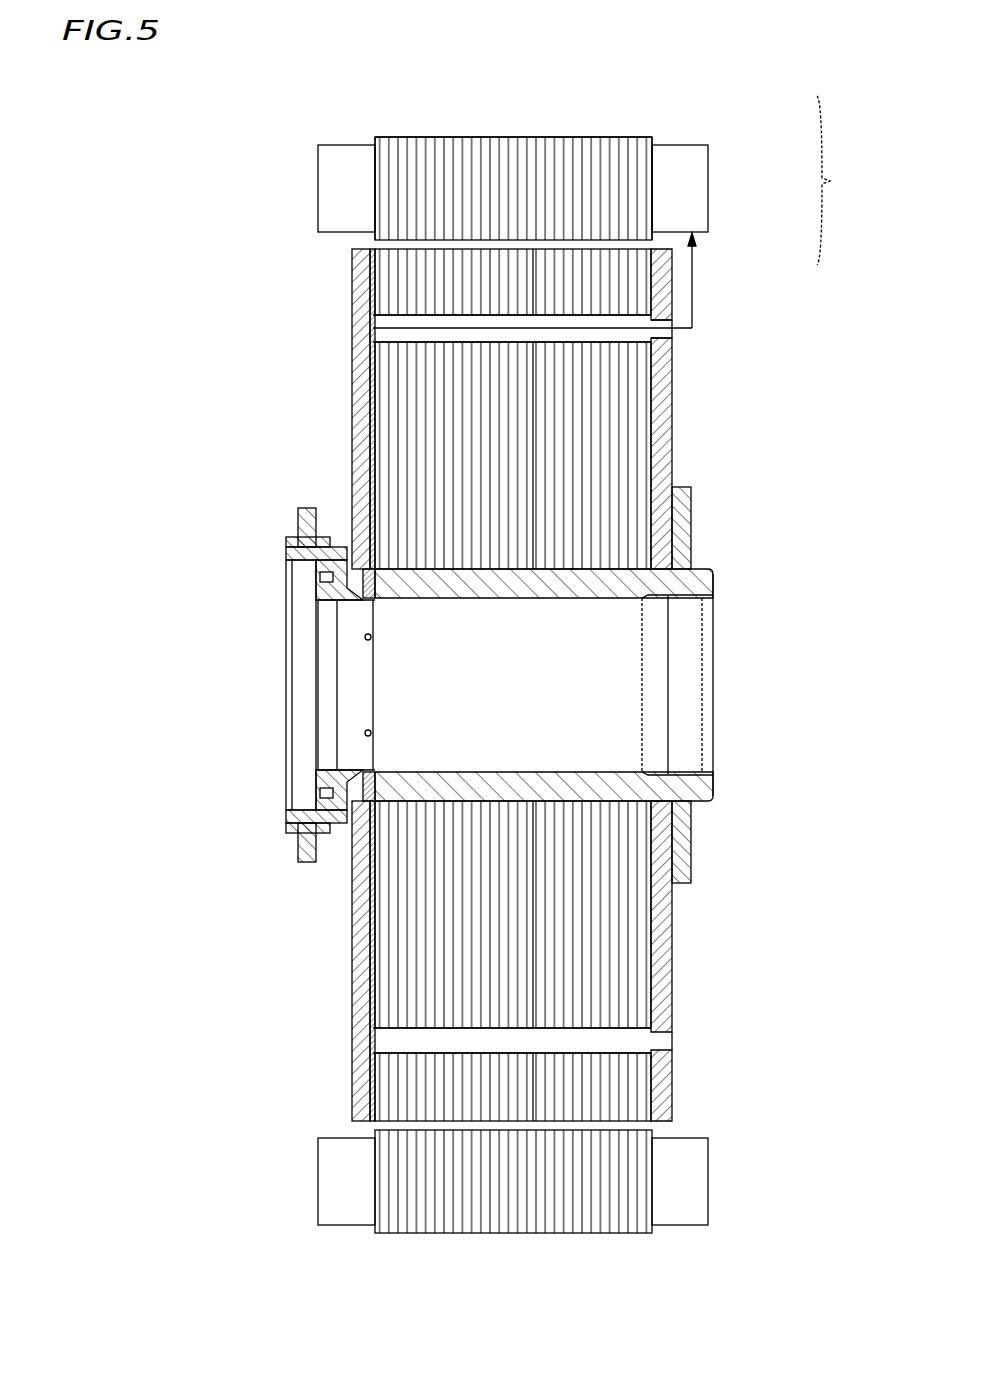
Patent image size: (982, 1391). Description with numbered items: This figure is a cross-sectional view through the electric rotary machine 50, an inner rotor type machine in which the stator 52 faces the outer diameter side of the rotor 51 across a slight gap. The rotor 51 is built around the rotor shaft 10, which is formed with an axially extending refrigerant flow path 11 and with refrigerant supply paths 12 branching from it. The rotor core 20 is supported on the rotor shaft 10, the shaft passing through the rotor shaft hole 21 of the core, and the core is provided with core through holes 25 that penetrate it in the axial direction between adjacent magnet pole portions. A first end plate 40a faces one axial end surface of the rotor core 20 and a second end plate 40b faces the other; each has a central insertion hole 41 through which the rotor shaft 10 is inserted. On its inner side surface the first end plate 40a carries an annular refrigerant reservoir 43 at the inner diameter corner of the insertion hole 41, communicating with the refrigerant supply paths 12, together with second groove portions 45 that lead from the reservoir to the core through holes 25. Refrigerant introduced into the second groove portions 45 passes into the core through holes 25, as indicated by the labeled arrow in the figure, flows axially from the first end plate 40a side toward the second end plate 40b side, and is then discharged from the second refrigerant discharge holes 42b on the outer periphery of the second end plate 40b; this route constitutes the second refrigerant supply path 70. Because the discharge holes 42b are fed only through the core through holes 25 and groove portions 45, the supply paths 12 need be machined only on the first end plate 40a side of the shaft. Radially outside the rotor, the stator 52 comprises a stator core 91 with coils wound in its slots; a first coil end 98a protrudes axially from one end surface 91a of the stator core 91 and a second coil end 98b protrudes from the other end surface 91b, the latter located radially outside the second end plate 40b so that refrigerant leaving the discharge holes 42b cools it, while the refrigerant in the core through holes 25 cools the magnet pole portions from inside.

The rotor shaft 10 is at (693, 550).
The refrigerant flow path 11 is at (628, 618).
The refrigerant supply paths 12 is at (365, 773).
The rotor core 20 is at (568, 236).
The rotor shaft hole 21 is at (540, 588).
The core through holes 25 is at (508, 327).
The first end plate 40a is at (352, 903).
The second end plate 40b is at (672, 917).
The insertion hole 41 is at (323, 796).
The second refrigerant discharge holes 42b is at (676, 336).
The refrigerant reservoir 43 is at (382, 793).
The second groove portions 45 is at (381, 460).
The electric rotary machine 50 is at (838, 180).
The rotor 51 is at (697, 338).
The stator 52 is at (685, 139).
The second refrigerant supply path 70 is at (553, 280).
The stator core 91 is at (443, 177).
The one end surface 91a is at (370, 158).
The other end surface 91b is at (658, 158).
The first coil end 98a is at (345, 163).
The second coil end 98b is at (675, 157).